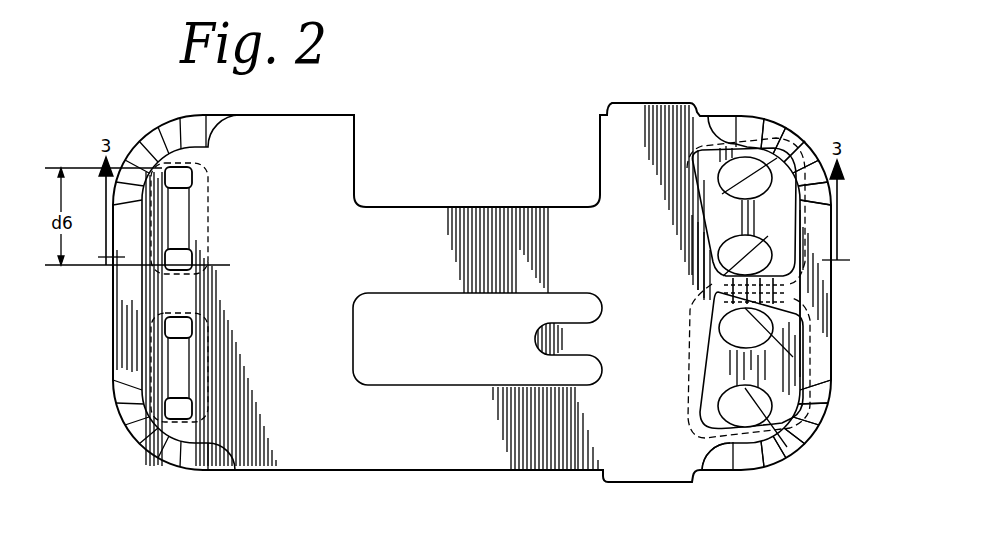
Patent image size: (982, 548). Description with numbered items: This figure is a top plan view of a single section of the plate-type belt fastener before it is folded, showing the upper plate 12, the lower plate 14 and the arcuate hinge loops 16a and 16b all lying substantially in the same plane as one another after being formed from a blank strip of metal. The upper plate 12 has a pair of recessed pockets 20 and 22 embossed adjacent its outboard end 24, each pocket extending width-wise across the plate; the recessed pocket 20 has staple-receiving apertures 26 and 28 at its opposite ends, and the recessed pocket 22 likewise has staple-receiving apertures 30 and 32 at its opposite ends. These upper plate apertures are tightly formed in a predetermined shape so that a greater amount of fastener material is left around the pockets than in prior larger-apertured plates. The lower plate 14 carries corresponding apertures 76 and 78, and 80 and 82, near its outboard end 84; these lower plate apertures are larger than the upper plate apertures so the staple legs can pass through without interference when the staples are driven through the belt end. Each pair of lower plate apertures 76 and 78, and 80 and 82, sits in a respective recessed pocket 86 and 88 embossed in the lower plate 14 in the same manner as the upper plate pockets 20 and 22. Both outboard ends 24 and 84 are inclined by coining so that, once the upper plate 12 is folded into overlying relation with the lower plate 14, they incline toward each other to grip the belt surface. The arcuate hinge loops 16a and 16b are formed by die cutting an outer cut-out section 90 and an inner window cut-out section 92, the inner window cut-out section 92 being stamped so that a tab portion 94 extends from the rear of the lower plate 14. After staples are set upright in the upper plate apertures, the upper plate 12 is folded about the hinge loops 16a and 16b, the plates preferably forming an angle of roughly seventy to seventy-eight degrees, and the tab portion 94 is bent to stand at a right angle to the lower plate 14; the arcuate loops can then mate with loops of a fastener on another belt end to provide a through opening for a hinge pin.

The upper plate 12 is at (340, 150).
The lower plate 14 is at (623, 120).
The arcuate hinge loop 16a is at (490, 222).
The arcuate hinge loop 16b is at (422, 460).
The recessed pocket 20 is at (183, 213).
The recessed pocket 22 is at (183, 370).
The outboard end 24 is at (101, 332).
The staple-receiving aperture 26 is at (190, 170).
The staple-receiving aperture 28 is at (190, 257).
The staple-receiving aperture 30 is at (188, 318).
The staple-receiving aperture 32 is at (190, 395).
The lower plate aperture 76 is at (705, 202).
The lower plate aperture 78 is at (718, 288).
The lower plate aperture 80 is at (812, 380).
The lower plate aperture 82 is at (780, 440).
The outboard end 84 is at (843, 327).
The recessed pocket 86 is at (695, 227).
The recessed pocket 88 is at (723, 442).
The outer cut-out section 90 is at (410, 207).
The inner window cut-out section 92 is at (397, 385).
The tab portion 94 is at (535, 332).